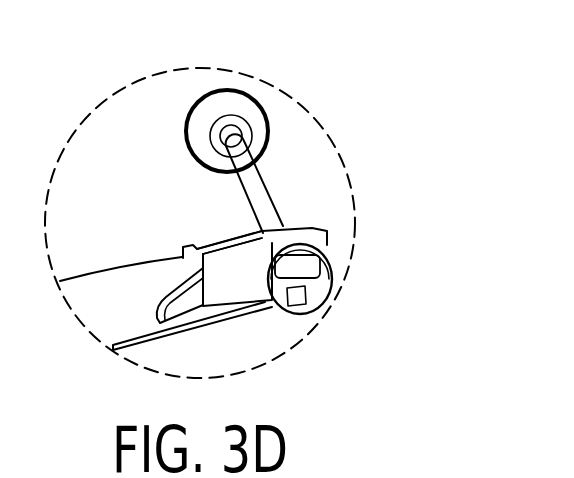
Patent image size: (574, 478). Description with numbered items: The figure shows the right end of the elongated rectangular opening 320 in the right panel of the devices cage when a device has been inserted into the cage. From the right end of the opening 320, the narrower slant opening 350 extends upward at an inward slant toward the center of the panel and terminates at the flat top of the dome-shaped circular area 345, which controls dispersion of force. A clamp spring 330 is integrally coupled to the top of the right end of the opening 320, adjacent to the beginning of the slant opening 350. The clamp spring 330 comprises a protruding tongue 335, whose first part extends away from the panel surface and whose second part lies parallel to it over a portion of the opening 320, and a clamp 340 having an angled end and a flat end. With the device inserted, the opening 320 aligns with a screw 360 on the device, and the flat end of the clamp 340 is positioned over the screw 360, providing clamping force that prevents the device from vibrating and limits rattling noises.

The elongated rectangular opening 320 is at (100, 288).
The clamp spring 330 is at (226, 240).
The protruding tongue 335 is at (200, 250).
The clamp 340 is at (300, 278).
The circular area 345 is at (242, 105).
The slant opening 350 is at (253, 192).
The screw 360 is at (328, 265).